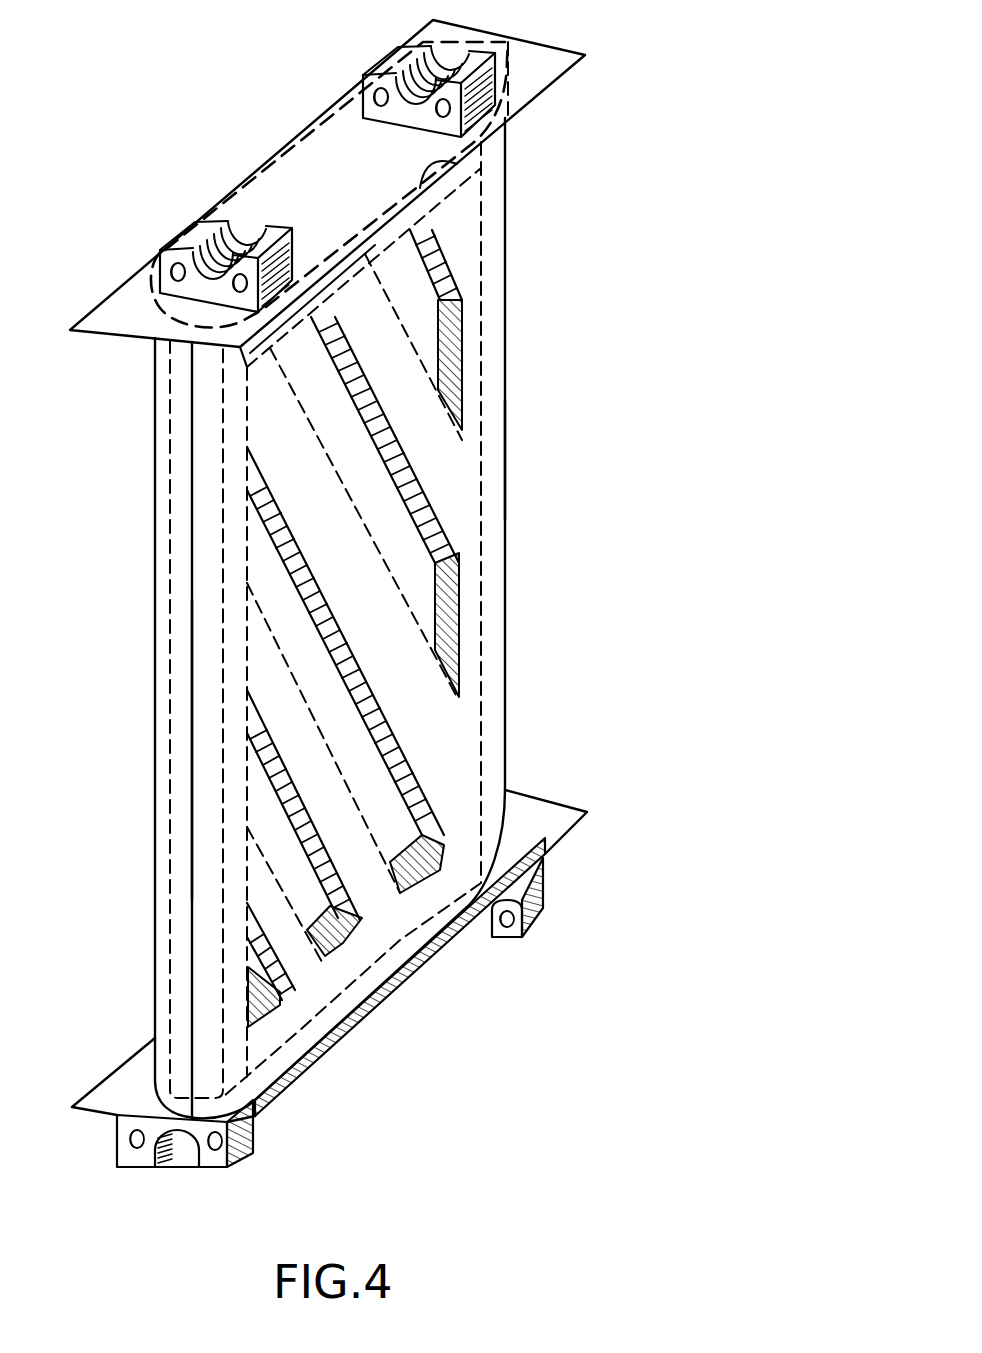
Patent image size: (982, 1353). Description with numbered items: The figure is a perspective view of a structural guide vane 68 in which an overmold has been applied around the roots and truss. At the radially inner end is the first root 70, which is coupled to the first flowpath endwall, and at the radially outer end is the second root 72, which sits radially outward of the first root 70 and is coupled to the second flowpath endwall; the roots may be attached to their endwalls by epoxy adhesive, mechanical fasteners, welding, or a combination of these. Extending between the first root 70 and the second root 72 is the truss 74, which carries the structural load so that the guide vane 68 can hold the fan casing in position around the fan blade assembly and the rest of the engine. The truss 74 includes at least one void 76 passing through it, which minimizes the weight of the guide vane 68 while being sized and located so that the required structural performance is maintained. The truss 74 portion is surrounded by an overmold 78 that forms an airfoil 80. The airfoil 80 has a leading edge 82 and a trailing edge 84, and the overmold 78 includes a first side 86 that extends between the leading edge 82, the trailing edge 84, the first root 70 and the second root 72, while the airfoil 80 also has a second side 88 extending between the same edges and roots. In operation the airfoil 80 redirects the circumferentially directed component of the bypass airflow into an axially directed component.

The structural guide vane 68 is at (626, 324).
The first root 70 is at (546, 826).
The second root 72 is at (540, 66).
The truss 74 is at (183, 692).
The void 76 is at (408, 580).
The overmold 78 is at (375, 982).
The airfoil 80 is at (497, 270).
The leading edge 82 is at (190, 863).
The trailing edge 84 is at (505, 456).
The first side 86 is at (465, 170).
The second side 88 is at (278, 165).